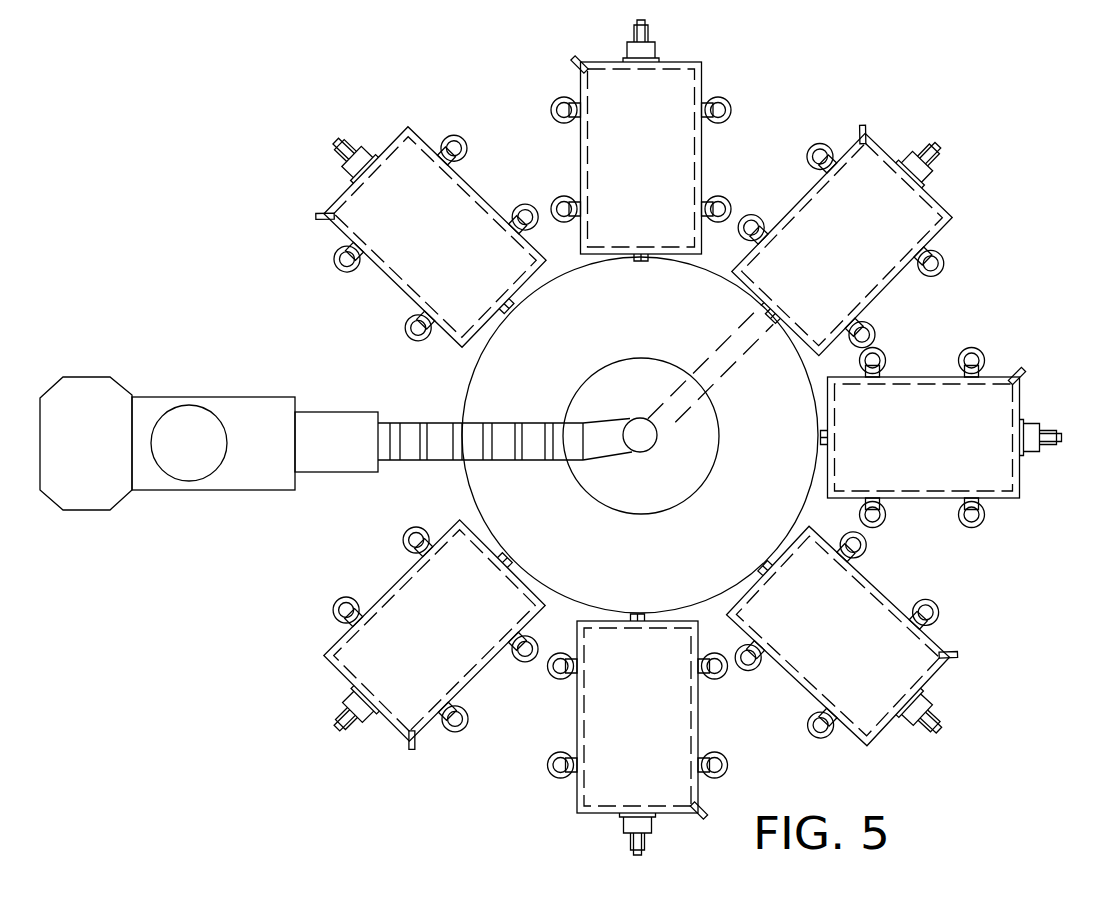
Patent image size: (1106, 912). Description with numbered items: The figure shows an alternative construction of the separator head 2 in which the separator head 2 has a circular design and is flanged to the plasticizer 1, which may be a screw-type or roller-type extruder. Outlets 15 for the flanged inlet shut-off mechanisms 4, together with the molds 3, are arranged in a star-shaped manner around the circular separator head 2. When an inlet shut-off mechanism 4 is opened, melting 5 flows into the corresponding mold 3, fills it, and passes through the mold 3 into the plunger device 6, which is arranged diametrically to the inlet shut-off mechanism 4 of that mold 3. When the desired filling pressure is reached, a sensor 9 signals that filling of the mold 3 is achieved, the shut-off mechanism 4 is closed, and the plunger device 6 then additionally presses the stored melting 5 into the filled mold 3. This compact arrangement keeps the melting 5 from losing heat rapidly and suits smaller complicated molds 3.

The plasticizer 1 is at (212, 478).
The separator head 2 is at (482, 381).
The mold 3 is at (402, 160).
The inlet shut-off mechanism 4 is at (645, 262).
The melting 5 is at (656, 48).
The plunger device 6 is at (648, 30).
The sensor 9 is at (572, 57).
The outlet 15 is at (782, 328).